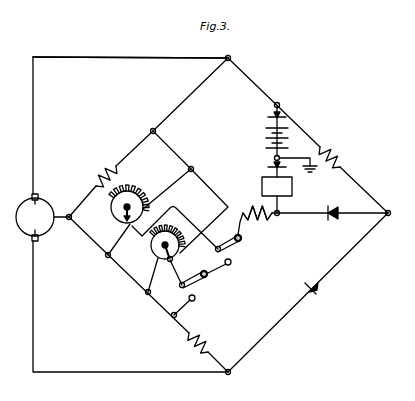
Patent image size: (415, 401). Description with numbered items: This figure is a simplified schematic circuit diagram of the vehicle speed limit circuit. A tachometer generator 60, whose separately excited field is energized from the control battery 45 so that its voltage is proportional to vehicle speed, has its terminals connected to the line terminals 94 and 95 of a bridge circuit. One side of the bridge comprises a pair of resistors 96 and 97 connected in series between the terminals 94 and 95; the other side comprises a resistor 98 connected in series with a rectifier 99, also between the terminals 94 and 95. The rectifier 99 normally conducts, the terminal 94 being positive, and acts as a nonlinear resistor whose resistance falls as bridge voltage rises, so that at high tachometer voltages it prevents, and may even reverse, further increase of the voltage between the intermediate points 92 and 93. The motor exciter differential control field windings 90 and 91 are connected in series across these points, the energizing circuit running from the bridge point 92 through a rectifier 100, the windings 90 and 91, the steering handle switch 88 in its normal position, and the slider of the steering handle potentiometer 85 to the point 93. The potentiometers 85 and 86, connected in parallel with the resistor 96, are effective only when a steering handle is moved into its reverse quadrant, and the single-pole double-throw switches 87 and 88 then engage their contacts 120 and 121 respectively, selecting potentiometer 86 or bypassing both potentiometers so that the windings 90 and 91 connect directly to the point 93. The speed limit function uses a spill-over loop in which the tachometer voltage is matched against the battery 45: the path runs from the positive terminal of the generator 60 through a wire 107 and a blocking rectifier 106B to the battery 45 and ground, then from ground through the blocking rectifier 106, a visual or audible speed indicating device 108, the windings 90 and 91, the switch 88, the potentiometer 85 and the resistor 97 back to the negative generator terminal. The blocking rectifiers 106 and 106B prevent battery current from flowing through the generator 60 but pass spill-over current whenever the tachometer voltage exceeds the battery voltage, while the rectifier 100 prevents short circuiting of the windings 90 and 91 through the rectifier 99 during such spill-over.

The control battery 45 is at (266, 131).
The tachometer generator 60 is at (35, 219).
The steering handle potentiometer 85 is at (137, 184).
The steering handle potentiometer 86 is at (181, 217).
The steering handle switch 87 is at (204, 281).
The steering handle switch 88 is at (242, 244).
The differential control field winding 90 is at (251, 205).
The differential control field winding 91 is at (257, 213).
The intermediate bridge point 92 is at (390, 211).
The intermediate bridge point 93 is at (65, 228).
The bridge line terminal 94 is at (231, 58).
The bridge line terminal 95 is at (231, 372).
The resistor 96 is at (101, 167).
The resistor 97 is at (197, 345).
The resistor 98 is at (335, 150).
The rectifier 99 is at (320, 290).
The rectifier 100 is at (333, 220).
The blocking rectifier 106 is at (270, 116).
The switch 106B is at (270, 167).
The wire 107 is at (132, 57).
The speed indicating device 108 is at (277, 195).
The contact 120 is at (195, 299).
The contact 121 is at (232, 263).